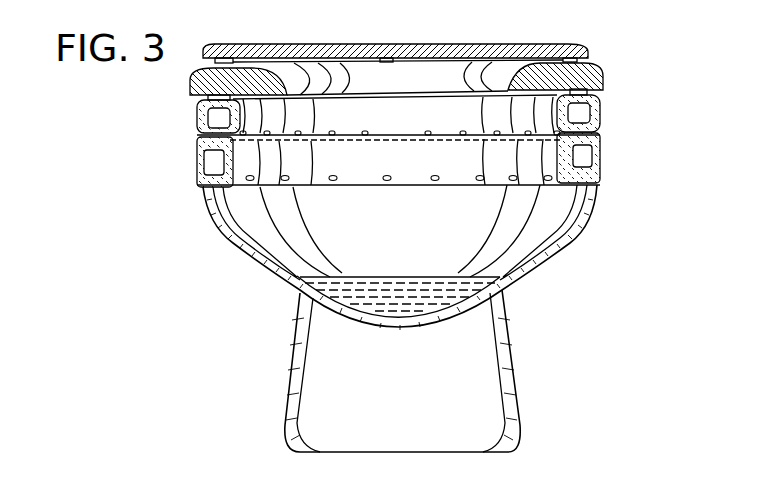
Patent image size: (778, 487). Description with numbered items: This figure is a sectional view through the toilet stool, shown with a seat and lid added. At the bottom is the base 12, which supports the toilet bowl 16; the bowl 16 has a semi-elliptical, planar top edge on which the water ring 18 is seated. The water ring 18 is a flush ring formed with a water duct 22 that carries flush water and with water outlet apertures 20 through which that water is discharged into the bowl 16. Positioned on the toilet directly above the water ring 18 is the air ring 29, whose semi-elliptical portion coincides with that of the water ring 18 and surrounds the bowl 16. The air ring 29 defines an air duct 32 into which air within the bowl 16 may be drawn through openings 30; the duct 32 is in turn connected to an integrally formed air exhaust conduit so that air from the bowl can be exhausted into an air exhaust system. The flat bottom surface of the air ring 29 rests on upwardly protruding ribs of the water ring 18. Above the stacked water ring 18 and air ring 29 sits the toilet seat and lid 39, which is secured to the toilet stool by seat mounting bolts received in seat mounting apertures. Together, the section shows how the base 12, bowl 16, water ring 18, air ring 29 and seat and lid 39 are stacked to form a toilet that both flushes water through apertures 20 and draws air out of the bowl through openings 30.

The toilet seat and lid 39 is at (263, 70).
The air ring 29 is at (624, 106).
The air duct 32 is at (583, 112).
The water ring 18 is at (436, 167).
The water duct 22 is at (587, 160).
The toilet bowl 16 is at (575, 238).
The base 12 is at (515, 353).
The openings 30 is at (365, 136).
The water outlet apertures 20 is at (432, 181).